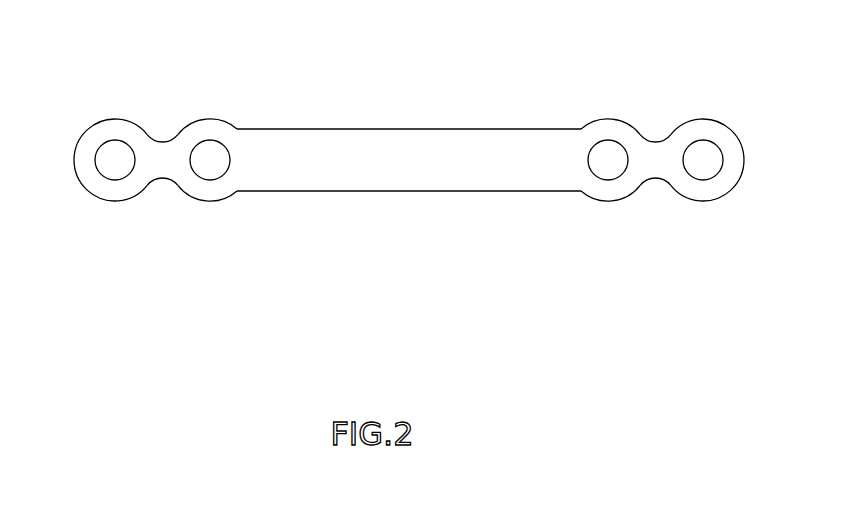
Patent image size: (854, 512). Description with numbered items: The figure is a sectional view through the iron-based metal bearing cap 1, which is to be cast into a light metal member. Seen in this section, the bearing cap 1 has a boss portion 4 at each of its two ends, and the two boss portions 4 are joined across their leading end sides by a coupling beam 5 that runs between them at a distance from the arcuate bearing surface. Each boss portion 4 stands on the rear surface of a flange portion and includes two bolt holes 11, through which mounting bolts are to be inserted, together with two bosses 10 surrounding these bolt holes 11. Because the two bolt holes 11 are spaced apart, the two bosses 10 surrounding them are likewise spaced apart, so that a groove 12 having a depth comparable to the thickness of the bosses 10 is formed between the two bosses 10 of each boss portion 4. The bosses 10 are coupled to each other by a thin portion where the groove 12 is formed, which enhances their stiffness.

The bearing cap 1 is at (383, 113).
The boss portion 4 is at (188, 102).
The coupling beam 5 is at (472, 177).
The boss 10 is at (112, 197).
The bolt hole 11 is at (110, 150).
The groove 12 is at (158, 144).